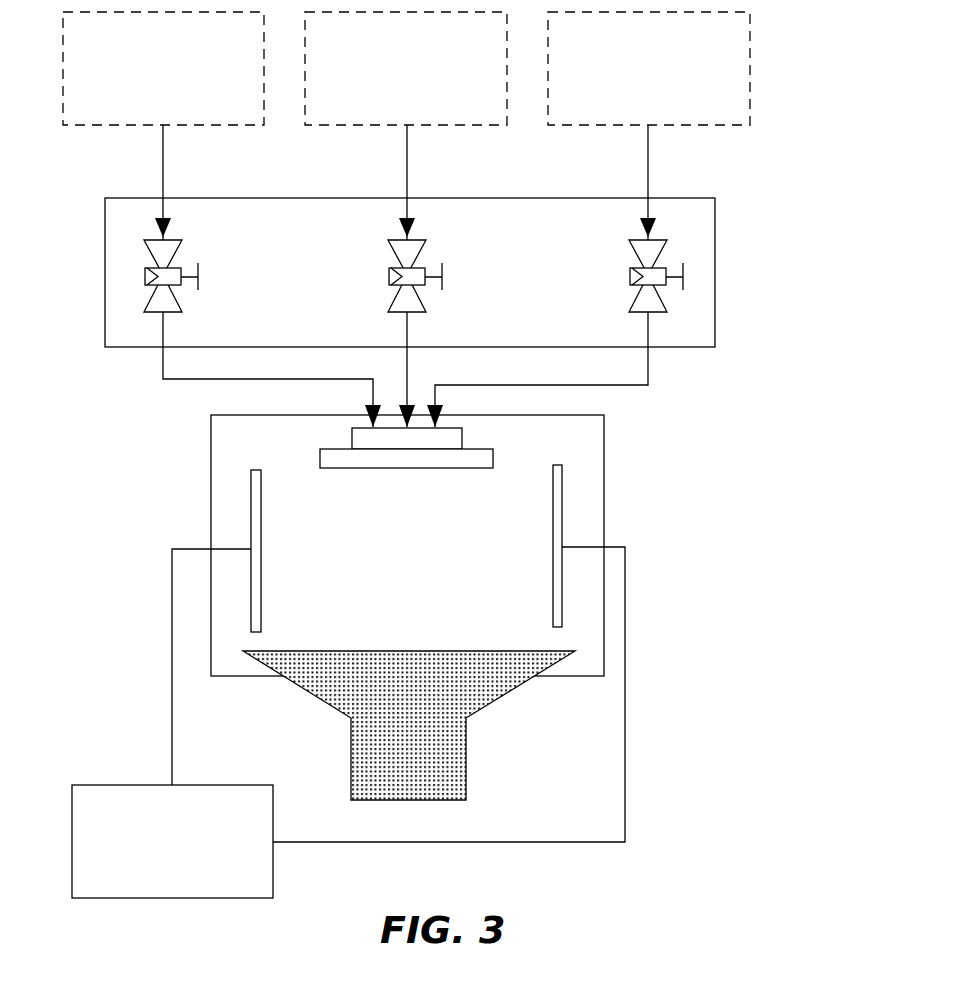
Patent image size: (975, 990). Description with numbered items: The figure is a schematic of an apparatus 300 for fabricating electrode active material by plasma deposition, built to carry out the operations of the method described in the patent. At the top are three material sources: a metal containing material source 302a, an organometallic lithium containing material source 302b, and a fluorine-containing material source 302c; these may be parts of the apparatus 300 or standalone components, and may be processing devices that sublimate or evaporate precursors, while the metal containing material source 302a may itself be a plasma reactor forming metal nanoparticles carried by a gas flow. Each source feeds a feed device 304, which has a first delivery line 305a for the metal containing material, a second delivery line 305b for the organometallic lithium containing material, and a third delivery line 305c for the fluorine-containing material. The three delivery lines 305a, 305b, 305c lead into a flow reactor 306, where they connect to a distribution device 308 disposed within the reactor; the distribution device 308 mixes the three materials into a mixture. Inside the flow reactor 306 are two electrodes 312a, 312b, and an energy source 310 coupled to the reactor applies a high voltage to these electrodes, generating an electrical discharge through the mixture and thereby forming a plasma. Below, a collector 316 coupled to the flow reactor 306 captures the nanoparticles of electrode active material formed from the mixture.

The apparatus 300 is at (775, 158).
The metal containing material source 302a is at (163, 68).
The organometallic lithium containing material source 302b is at (406, 68).
The fluorine-containing material source 302c is at (649, 68).
The feed device 304 is at (716, 272).
The first delivery line 305a is at (163, 364).
The second delivery line 305b is at (409, 323).
The third delivery line 305c is at (656, 323).
The flow reactor 306 is at (605, 447).
The distribution device 308 is at (320, 458).
The energy source 310 is at (348, 722).
The electrode 312a is at (558, 506).
The electrode 312b is at (251, 522).
The collector 316 is at (467, 786).